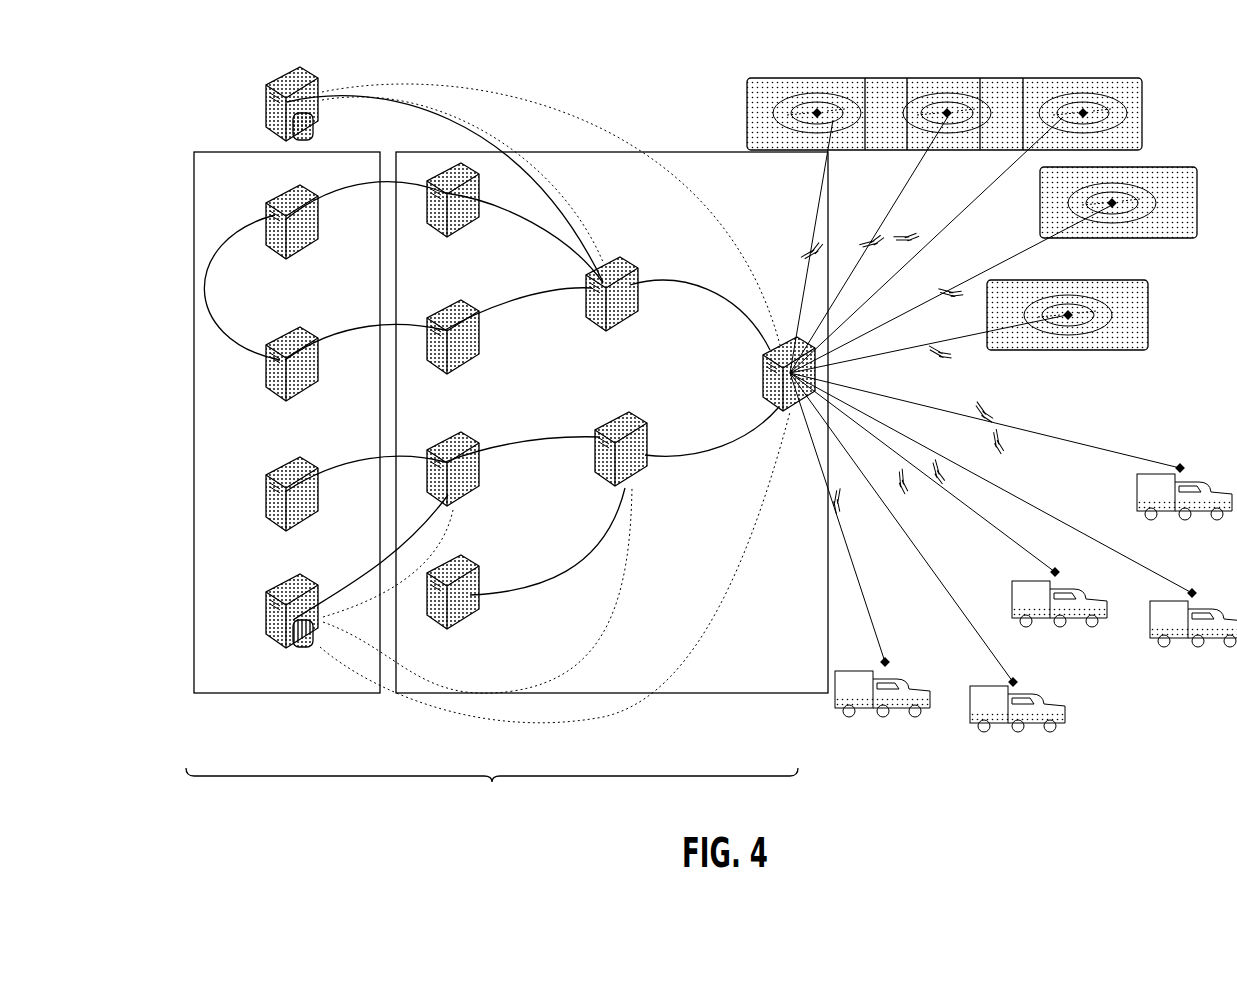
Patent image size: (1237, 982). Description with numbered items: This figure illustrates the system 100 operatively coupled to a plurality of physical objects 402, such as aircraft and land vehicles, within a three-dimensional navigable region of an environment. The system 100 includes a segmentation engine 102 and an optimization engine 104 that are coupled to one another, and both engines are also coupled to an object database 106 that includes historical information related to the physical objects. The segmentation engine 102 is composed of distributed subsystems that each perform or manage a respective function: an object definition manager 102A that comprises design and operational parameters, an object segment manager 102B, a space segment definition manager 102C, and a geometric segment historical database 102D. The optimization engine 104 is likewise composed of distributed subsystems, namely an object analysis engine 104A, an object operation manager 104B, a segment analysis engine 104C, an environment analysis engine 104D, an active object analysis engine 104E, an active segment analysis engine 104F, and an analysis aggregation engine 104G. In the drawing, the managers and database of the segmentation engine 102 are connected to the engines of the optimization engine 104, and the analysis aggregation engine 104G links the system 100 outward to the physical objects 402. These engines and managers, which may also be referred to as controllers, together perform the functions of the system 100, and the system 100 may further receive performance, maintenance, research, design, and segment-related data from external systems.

The system 100 is at (492, 787).
The segmentation engine 102 is at (300, 690).
The object definition manager 102A is at (300, 185).
The object segment manager 102B is at (300, 327).
The space segment definition manager 102C is at (300, 457).
The geometric segment historical database 102D is at (300, 574).
The optimization engine 104 is at (618, 690).
The object analysis engine 104A is at (461, 163).
The object operation manager 104B is at (461, 300).
The segment analysis engine 104C is at (461, 432).
The environment analysis engine 104D is at (459, 555).
The active object analysis engine 104E is at (620, 257).
The active segment analysis engine 104F is at (629, 412).
The analysis aggregation engine 104G is at (771, 350).
The object database 106 is at (300, 67).
The physical objects 402 is at (798, 124).